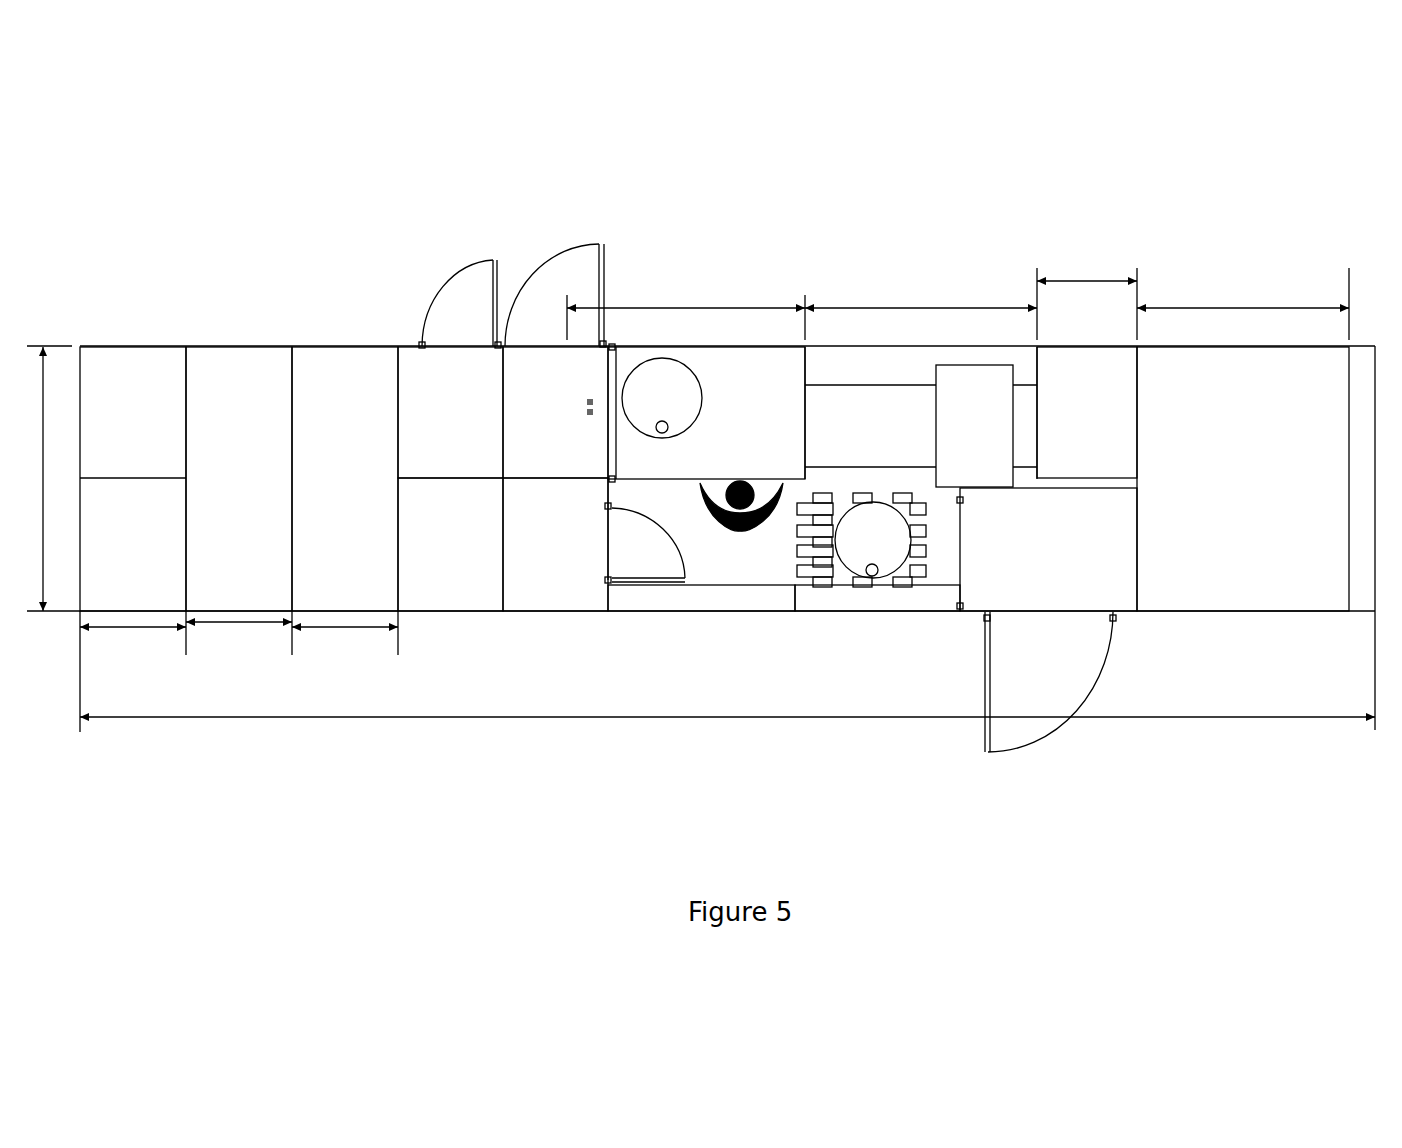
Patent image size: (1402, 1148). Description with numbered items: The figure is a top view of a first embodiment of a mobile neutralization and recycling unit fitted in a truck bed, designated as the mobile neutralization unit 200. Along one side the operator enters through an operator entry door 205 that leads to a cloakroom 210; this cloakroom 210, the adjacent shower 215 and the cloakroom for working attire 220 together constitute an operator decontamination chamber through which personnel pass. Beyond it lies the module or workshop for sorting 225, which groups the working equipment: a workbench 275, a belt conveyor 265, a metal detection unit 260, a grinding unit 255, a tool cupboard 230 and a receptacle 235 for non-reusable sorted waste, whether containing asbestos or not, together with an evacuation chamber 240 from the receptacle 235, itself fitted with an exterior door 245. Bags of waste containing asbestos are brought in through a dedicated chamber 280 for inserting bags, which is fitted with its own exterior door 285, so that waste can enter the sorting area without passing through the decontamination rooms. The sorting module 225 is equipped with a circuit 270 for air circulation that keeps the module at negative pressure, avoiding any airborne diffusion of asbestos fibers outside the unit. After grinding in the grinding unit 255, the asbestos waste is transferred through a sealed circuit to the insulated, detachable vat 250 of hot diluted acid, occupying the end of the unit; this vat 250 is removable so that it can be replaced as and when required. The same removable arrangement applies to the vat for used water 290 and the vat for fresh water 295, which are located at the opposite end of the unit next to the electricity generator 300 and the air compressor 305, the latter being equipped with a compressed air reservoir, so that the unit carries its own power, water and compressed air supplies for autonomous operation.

The mobile neutralization unit 200 is at (715, 172).
The operator entry door 205 is at (468, 283).
The cloakroom 210 is at (410, 367).
The shower 215 is at (455, 603).
The cloakroom for working attire 220 is at (562, 603).
The module or workshop for sorting 225 is at (738, 565).
The tool cupboard 230 is at (633, 603).
The receptacle for non-reusable sorted waste 235 is at (878, 555).
The evacuation chamber 240 is at (1128, 590).
The exterior door 245 is at (1022, 732).
The detachable vat of acid solution 250 is at (1274, 365).
The grinding unit 255 is at (1060, 353).
The metal detection unit 260 is at (975, 390).
The belt conveyor 265 is at (892, 400).
The circuit for air circulation 270 is at (833, 353).
The workbench 275 is at (738, 353).
The chamber for inserting bags of waste 280 is at (585, 388).
The exterior door 285 is at (583, 260).
The vat for used water 290 is at (325, 367).
The vat for fresh water 295 is at (231, 367).
The electricity generator 300 is at (113, 367).
The air compressor 305 is at (113, 603).